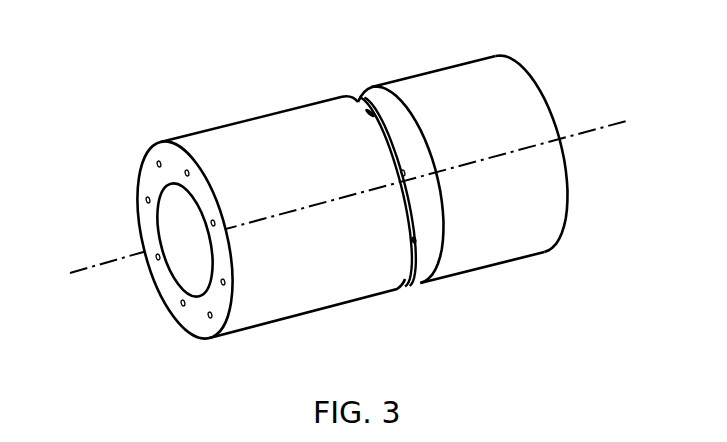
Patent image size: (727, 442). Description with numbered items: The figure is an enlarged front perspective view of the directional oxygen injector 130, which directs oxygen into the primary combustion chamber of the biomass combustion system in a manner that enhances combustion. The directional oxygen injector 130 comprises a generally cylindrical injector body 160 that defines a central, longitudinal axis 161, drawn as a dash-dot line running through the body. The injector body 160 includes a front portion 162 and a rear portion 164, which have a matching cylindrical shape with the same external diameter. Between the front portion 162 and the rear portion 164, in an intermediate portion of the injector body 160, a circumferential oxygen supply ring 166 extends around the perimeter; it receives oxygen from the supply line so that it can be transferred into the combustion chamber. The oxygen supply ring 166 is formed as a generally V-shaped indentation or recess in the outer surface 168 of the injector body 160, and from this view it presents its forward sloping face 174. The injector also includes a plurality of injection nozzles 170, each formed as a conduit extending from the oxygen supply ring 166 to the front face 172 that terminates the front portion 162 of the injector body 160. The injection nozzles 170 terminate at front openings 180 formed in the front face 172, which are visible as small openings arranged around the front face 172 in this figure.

The directional oxygen injector 130 is at (125, 40).
The injector body 160 is at (194, 126).
The central longitudinal axis 161 is at (598, 127).
The front portion 162 is at (280, 116).
The rear portion 164 is at (468, 72).
The oxygen supply ring 166 is at (351, 92).
The outer surface 168 is at (323, 296).
The injection nozzle 170 is at (138, 163).
The front face 172 is at (193, 327).
The forward sloping face 174 is at (417, 270).
The front openings 180 is at (146, 199).